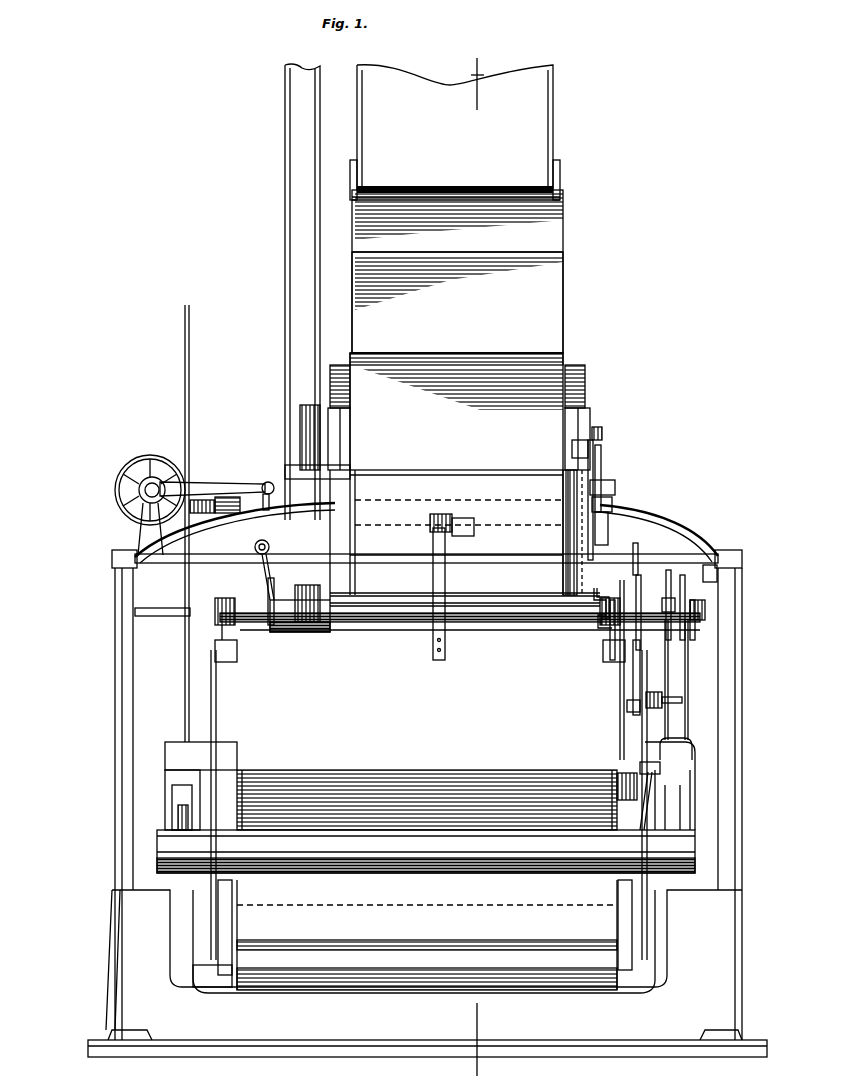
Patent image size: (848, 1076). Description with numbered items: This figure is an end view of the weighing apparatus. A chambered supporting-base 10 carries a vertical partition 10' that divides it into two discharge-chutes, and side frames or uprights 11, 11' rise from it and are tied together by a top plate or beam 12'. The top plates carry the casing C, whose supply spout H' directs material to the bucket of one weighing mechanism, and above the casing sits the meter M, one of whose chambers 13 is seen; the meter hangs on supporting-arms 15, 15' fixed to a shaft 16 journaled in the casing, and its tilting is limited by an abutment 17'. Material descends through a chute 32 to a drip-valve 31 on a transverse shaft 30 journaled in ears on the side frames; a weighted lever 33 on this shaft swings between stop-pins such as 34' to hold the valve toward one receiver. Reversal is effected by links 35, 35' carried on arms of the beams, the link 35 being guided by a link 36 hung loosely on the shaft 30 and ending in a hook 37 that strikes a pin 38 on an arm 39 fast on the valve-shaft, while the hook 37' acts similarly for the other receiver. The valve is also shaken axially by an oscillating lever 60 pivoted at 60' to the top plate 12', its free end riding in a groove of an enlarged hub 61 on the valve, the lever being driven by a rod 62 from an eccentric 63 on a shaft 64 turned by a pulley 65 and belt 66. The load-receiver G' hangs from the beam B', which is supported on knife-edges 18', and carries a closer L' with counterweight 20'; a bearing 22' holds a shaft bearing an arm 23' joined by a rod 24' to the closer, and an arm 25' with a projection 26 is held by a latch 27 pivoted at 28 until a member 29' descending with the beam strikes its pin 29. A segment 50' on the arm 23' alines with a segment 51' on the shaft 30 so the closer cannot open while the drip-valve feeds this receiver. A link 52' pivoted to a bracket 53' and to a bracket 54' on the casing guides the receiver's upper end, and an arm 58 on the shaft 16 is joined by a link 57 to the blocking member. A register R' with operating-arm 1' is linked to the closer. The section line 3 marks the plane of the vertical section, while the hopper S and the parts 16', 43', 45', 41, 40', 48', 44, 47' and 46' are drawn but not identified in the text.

The section line 3 is at (477, 75).
The supply hopper S is at (455, 132).
The chute 32 is at (287, 203).
The meter M is at (566, 241).
The chamber 13 is at (457, 302).
The supporting-arm 15 is at (592, 386).
The supporting-arm 15' is at (361, 386).
The abutment 17' is at (459, 439).
The casing C is at (449, 535).
The dotted line level 16' is at (459, 521).
The side wall 43' is at (550, 532).
The supply spout H' is at (456, 572).
The load-receiver G' is at (460, 628).
The bracket 53' is at (456, 594).
The link 52' is at (451, 507).
The bracket 54' is at (477, 532).
The pulley 65 is at (150, 456).
The eccentric 63 is at (160, 482).
The shaft 64 is at (140, 518).
The rod 62 is at (259, 483).
The arm 58 is at (205, 498).
The shaft 16 is at (223, 523).
The belt 66 is at (189, 390).
The link 57 is at (185, 682).
The pivot 60' is at (279, 542).
The oscillating lever 60 is at (450, 692).
The enlarged hub 61 is at (273, 606).
The drip-valve 31 is at (278, 634).
The bearing 22' is at (417, 617).
The arm 23' is at (410, 645).
The valve-shaft 30 is at (174, 606).
The rod 24' is at (463, 805).
The top plate 12' is at (459, 538).
The beam B' is at (426, 821).
The knife-edge 18' is at (426, 801).
The register R' is at (608, 778).
The operating-arm 1' is at (651, 760).
The arm 25' is at (593, 670).
The latch 27 is at (627, 706).
The projection 26 is at (633, 711).
The pivot 28 is at (662, 698).
The pin 29 is at (684, 710).
The member 29' is at (687, 680).
The link 35 is at (731, 680).
The link 35' is at (722, 734).
The link 36 is at (645, 622).
The bracket 45' is at (600, 600).
The segment 50' is at (649, 554).
The segment 51' is at (651, 609).
The hook 37' is at (686, 571).
The hook 37 is at (699, 578).
The stop-pin 34' is at (728, 549).
The weighted lever 33 is at (718, 583).
The arm 39 is at (662, 604).
The pin 38 is at (680, 600).
The block 41 is at (603, 433).
The rod 40' is at (620, 494).
The rod 48' is at (620, 478).
The block 44 is at (615, 486).
The block 47' is at (628, 492).
The plate 46' is at (647, 508).
The closer L' is at (427, 935).
The counterweight 20' is at (425, 927).
The vertical partition 10' is at (216, 989).
The supporting-base 10 is at (427, 973).
The side frame 11 is at (745, 804).
The side frame 11' is at (104, 804).